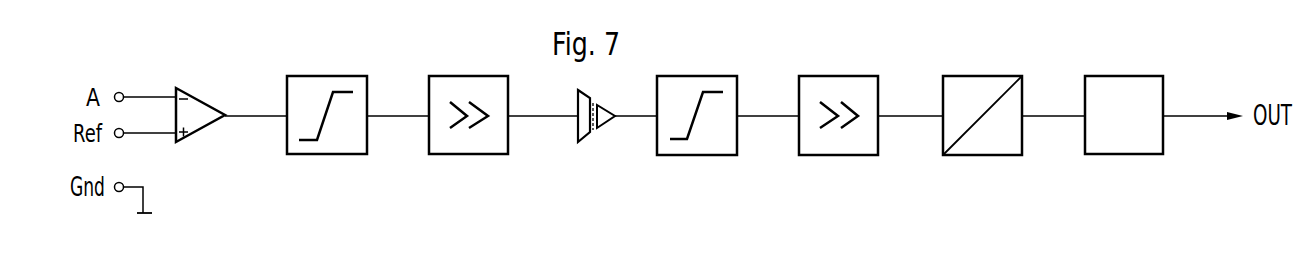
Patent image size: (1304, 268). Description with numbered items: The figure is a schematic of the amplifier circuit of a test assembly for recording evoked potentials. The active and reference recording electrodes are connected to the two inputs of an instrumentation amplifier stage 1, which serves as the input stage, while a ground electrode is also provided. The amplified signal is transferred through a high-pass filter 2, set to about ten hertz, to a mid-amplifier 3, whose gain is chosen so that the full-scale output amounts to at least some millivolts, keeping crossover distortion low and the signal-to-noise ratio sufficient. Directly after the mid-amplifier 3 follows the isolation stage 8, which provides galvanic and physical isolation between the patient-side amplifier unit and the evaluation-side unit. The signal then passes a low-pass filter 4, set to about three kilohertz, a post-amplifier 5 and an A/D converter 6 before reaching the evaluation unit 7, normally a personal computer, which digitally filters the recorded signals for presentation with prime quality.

The instrumentation amplifier stage 1 is at (200, 133).
The high-pass filter 2 is at (319, 155).
The mid-amplifier 3 is at (463, 155).
The isolation stage 8 is at (588, 133).
The low-pass filter 4 is at (690, 156).
The post-amplifier 5 is at (835, 156).
The A/D converter 6 is at (973, 156).
The evaluation unit 7 is at (1120, 155).